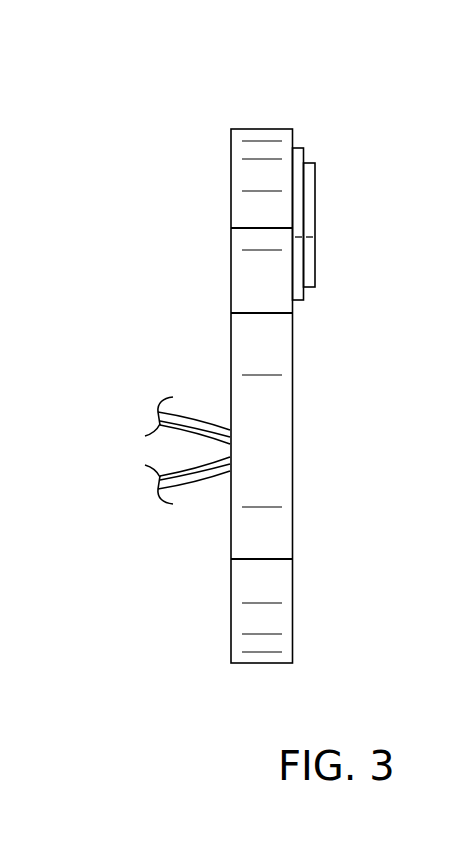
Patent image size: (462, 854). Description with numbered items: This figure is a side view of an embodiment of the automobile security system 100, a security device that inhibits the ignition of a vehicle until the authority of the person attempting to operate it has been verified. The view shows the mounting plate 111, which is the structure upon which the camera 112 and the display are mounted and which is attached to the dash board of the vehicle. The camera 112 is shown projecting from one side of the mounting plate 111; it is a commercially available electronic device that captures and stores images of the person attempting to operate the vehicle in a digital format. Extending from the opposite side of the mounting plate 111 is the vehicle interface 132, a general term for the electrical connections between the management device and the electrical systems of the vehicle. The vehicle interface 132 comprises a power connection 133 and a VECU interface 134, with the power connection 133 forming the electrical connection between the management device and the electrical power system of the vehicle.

The automobile security system 100 is at (194, 98).
The mounting plate 111 is at (262, 150).
The camera 112 is at (315, 223).
The vehicle interface 132 is at (133, 383).
The power connection 133 is at (193, 423).
The VECU interface 134 is at (190, 478).